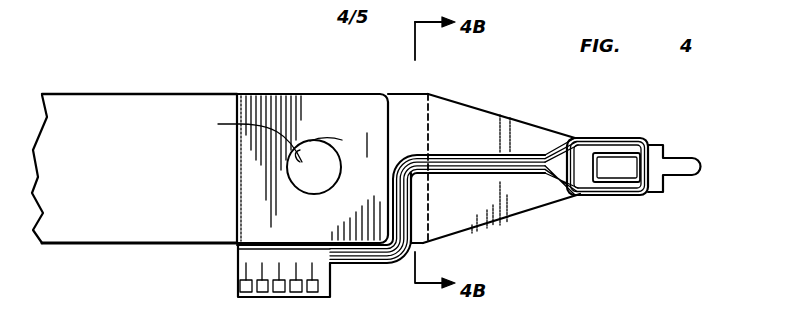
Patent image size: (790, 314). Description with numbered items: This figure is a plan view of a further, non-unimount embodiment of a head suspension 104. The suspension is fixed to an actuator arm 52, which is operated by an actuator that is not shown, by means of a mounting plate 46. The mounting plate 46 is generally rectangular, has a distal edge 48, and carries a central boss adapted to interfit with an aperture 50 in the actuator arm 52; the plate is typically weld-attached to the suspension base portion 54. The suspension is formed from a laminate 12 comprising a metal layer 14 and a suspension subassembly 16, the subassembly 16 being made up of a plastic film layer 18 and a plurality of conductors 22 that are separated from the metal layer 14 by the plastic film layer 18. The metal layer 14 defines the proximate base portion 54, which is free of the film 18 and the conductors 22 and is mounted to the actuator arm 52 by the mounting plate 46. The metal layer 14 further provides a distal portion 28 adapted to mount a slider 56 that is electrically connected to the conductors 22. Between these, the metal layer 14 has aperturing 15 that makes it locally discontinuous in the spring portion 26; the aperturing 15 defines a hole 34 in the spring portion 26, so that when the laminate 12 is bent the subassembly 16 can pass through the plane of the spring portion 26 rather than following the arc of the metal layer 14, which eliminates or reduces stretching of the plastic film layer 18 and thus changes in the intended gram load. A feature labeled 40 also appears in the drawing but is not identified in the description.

The suspension 104 is at (33, 110).
The actuator arm 52 is at (83, 100).
The base portion 54 is at (293, 93).
The mounting plate 46 is at (252, 152).
The distal edge 48 is at (403, 154).
The aperture 50 is at (248, 138).
The edge 40 is at (343, 138).
The aperturing 15 is at (393, 150).
The plastic film layer 18 is at (387, 265).
The spring portion 26 is at (415, 93).
The laminate 12 is at (455, 137).
The suspension subassembly 16 is at (518, 157).
The metal layer 14 is at (463, 213).
The hole 34 is at (420, 182).
The conductors 22 is at (523, 174).
The slider 56 is at (622, 160).
The distal portion 28 is at (655, 145).